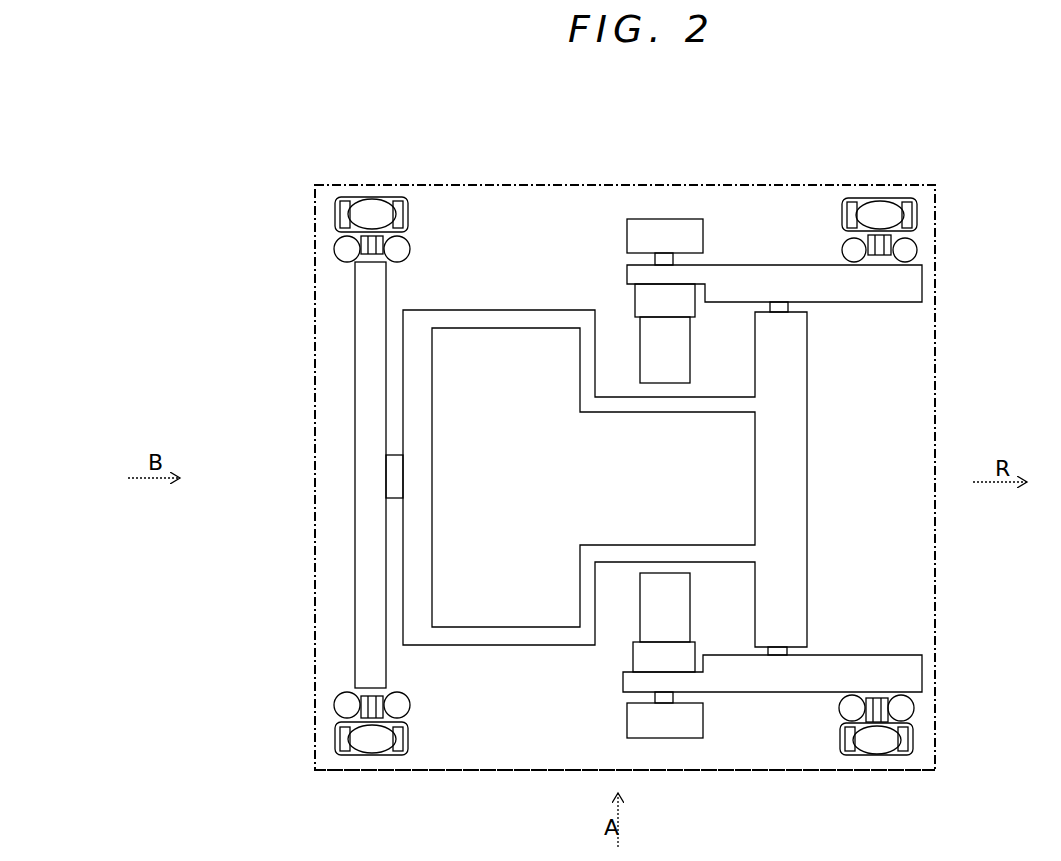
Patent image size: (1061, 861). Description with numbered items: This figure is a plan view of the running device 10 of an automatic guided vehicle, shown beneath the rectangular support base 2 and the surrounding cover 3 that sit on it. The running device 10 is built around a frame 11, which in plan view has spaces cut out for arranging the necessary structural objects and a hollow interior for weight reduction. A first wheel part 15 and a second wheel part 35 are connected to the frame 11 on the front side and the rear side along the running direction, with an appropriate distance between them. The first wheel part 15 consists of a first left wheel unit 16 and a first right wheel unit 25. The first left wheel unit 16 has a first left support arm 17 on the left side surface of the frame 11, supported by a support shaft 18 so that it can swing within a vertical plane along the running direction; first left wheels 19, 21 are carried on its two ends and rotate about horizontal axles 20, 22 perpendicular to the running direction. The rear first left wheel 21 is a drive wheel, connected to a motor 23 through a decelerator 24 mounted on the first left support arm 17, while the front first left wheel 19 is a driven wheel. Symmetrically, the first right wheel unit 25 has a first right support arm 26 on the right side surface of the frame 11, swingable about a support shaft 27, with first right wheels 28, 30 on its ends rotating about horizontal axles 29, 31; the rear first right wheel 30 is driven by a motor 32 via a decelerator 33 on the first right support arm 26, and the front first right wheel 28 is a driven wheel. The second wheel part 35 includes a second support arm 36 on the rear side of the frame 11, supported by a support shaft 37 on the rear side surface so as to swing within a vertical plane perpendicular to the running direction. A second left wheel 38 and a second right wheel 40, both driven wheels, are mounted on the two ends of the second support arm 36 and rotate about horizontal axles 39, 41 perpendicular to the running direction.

The support base 2 is at (925, 378).
The cover 3 is at (937, 327).
The running device 10 is at (257, 350).
The frame 11 is at (798, 471).
The first wheel part 15 is at (817, 243).
The first left wheel unit 16 is at (772, 193).
The first left support arm 17 is at (768, 268).
The support shaft 18 is at (782, 310).
The first left wheel 19 is at (918, 213).
The horizontal axle 20 is at (917, 259).
The first left wheel 21 is at (683, 225).
The horizontal axle 22 is at (655, 258).
The motor 23 is at (683, 349).
The decelerator 24 is at (636, 297).
The first right wheel unit 25 is at (767, 745).
The first right support arm 26 is at (763, 687).
The support shaft 27 is at (788, 645).
The first right wheel 28 is at (915, 743).
The horizontal axle 29 is at (912, 698).
The first right wheel 30 is at (672, 732).
The horizontal axle 31 is at (657, 697).
The motor 32 is at (683, 607).
The decelerator 33 is at (637, 655).
The second wheel part 35 is at (290, 513).
The second support arm 36 is at (363, 567).
The support shaft 37 is at (392, 472).
The second left wheel 38 is at (372, 204).
The horizontal axle 39 is at (387, 257).
The second right wheel 40 is at (373, 755).
The horizontal axle 41 is at (398, 698).